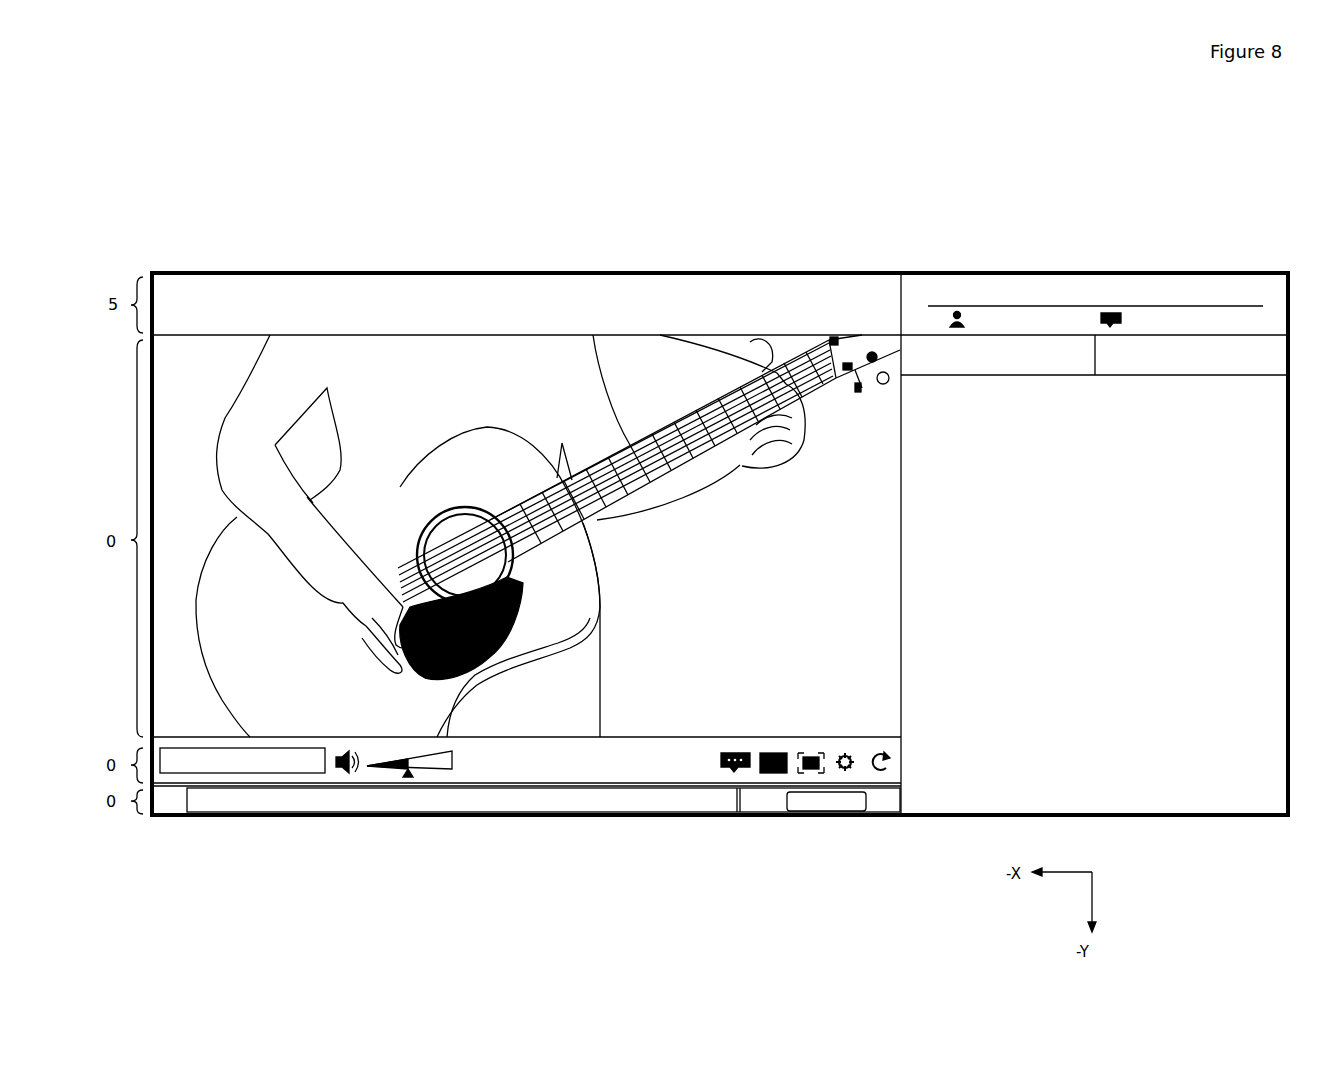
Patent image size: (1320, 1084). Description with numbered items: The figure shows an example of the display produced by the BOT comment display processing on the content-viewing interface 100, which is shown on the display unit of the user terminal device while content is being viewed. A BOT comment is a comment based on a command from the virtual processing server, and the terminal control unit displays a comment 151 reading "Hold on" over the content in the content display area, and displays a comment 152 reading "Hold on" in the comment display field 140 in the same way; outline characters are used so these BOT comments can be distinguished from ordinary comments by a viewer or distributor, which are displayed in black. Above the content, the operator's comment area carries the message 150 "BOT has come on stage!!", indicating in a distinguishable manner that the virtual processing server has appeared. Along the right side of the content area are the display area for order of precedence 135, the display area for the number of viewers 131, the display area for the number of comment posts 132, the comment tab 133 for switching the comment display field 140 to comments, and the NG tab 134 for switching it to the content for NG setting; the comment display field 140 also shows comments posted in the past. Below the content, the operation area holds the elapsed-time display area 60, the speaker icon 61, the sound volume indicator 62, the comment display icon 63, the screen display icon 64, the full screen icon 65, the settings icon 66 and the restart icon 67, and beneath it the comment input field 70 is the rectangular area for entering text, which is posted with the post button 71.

The content-viewing interface 100 is at (206, 226).
The system message display 150 is at (608, 290).
The comment 151 is at (550, 373).
The comment 152 is at (1012, 407).
The display area for the number of viewers 131 is at (1000, 318).
The display area for the number of comment posts 132 is at (1185, 313).
The comment tab 133 is at (922, 353).
The NG tab 134 is at (1225, 367).
The display area for order of precedence 135 is at (1110, 278).
The comment display field 140 is at (1183, 792).
The elapsed-time display area 60 is at (295, 768).
The speaker icon 61 is at (345, 771).
The sound volume indicator 62 is at (432, 772).
The comment display icon 63 is at (727, 773).
The screen display icon 64 is at (767, 775).
The full screen icon 65 is at (800, 773).
The settings icon 66 is at (857, 773).
The restart icon 67 is at (882, 773).
The comment input field 70 is at (530, 797).
The post button 71 is at (815, 797).